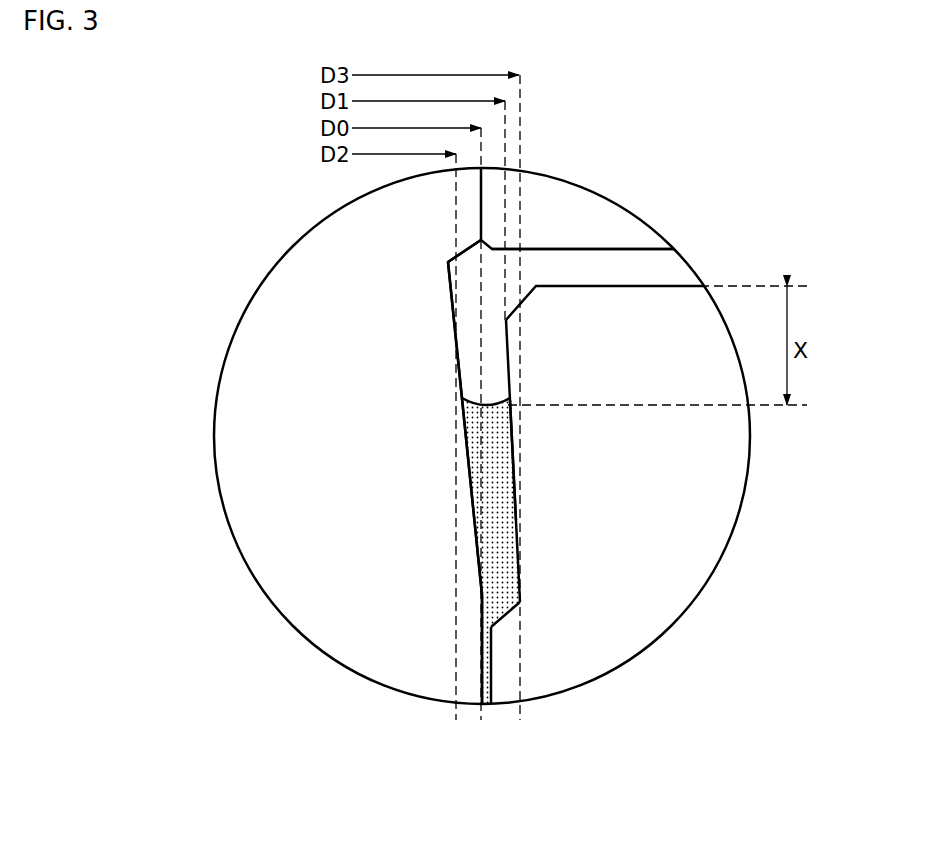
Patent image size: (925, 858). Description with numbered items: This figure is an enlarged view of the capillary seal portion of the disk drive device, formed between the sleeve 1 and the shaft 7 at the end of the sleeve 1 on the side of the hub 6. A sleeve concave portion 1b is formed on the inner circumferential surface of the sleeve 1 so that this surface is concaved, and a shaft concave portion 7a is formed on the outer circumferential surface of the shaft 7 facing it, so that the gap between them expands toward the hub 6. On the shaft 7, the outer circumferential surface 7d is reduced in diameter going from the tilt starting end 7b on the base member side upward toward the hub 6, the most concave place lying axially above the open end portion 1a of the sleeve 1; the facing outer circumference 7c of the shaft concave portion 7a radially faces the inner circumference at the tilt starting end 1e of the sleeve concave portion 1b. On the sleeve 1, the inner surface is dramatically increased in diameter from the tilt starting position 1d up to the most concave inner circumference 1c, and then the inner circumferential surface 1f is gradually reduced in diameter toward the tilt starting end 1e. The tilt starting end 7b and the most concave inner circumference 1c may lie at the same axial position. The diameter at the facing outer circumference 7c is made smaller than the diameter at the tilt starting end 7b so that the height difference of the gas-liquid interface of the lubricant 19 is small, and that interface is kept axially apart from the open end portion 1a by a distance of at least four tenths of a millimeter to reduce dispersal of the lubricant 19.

The sleeve 1 is at (570, 668).
The open end portion 1a is at (537, 285).
The sleeve concave portion 1b is at (545, 433).
The most concave inner circumference 1c is at (521, 602).
The tilt starting position 1d is at (492, 627).
The tilt starting end 1e is at (508, 320).
The inner circumferential surface 1f is at (513, 458).
The hub 6 is at (568, 198).
The shaft 7 is at (323, 252).
The shaft concave portion 7a is at (425, 372).
The tilt starting end 7b is at (482, 595).
The facing outer circumference 7c is at (452, 320).
The outer circumferential surface 7d is at (467, 452).
The lubricant 19 is at (497, 510).